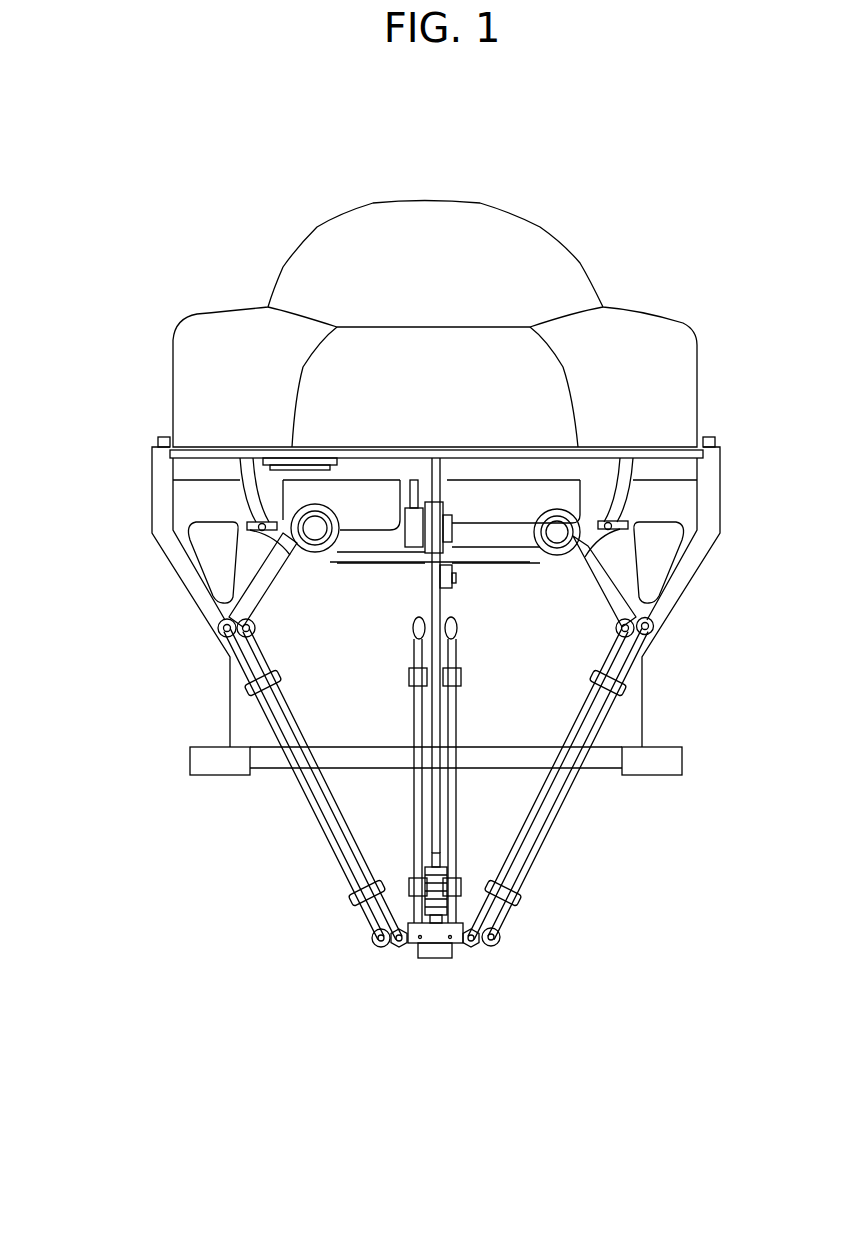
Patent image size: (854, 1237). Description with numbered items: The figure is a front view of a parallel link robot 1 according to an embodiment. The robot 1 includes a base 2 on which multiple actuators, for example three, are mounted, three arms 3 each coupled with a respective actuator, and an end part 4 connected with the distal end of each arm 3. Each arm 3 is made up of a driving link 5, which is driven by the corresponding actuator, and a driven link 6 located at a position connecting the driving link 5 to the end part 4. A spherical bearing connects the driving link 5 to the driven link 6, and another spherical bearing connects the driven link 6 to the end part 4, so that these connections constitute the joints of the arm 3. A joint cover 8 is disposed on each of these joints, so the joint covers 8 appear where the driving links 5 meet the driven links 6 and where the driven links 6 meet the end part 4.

The parallel link robot 1 is at (150, 185).
The base 2 is at (172, 390).
The arm 3 is at (317, 877).
The end part 4 is at (438, 977).
The driving link 5 is at (273, 582).
The driven link 6 is at (413, 715).
The joint cover 8 is at (220, 624).